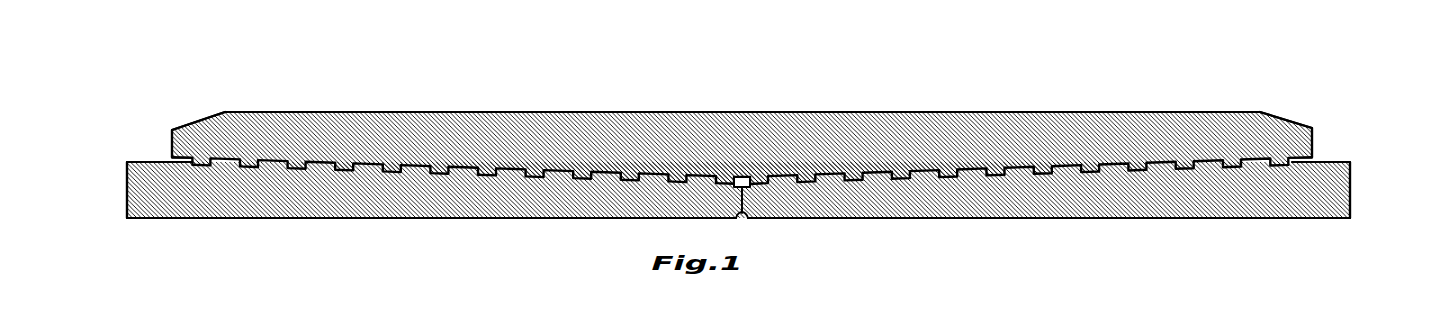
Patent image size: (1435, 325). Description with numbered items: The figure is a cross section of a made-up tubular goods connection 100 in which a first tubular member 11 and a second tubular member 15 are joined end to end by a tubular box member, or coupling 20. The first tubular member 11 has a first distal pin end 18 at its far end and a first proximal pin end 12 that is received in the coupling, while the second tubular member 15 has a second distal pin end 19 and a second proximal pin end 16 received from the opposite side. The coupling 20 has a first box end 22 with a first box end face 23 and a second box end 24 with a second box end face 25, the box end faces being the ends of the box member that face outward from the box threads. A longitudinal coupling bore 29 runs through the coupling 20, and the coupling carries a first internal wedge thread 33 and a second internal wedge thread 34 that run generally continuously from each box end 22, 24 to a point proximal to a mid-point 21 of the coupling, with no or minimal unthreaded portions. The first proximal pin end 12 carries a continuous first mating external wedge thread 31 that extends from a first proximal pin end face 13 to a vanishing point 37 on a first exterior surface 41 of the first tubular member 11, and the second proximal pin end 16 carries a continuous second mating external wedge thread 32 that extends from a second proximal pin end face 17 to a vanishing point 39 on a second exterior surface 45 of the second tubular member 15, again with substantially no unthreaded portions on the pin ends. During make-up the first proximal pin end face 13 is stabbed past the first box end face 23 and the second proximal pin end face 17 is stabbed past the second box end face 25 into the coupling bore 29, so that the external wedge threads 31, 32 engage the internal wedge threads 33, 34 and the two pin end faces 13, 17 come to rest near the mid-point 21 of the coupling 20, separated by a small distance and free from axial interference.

The made-up tubular goods connection 100 is at (855, 90).
The tubular box member 20 is at (731, 150).
The mid-point 21 is at (742, 109).
The first box end 22 is at (287, 127).
The second box end 24 is at (1188, 125).
The first box end face 23 is at (171, 140).
The second box end face 25 is at (1314, 159).
The first tubular member 11 is at (378, 207).
The second tubular member 15 is at (1043, 207).
The first proximal pin end 12 is at (615, 219).
The first proximal pin end face 13 is at (727, 196).
The second proximal pin end face 17 is at (757, 196).
The second proximal pin end 16 is at (866, 205).
The first distal pin end 18 is at (126, 188).
The second distal pin end 19 is at (1351, 188).
The longitudinal coupling bore 29 is at (1355, 152).
The first mating external wedge thread 31 is at (497, 245).
The first internal wedge thread 33 is at (497, 245).
The second mating external wedge thread 32 is at (1128, 245).
The second internal wedge thread 34 is at (1128, 245).
The vanishing point 37 is at (188, 160).
The vanishing point 39 is at (1296, 160).
The first exterior surface 41 is at (168, 160).
The second exterior surface 45 is at (1315, 160).